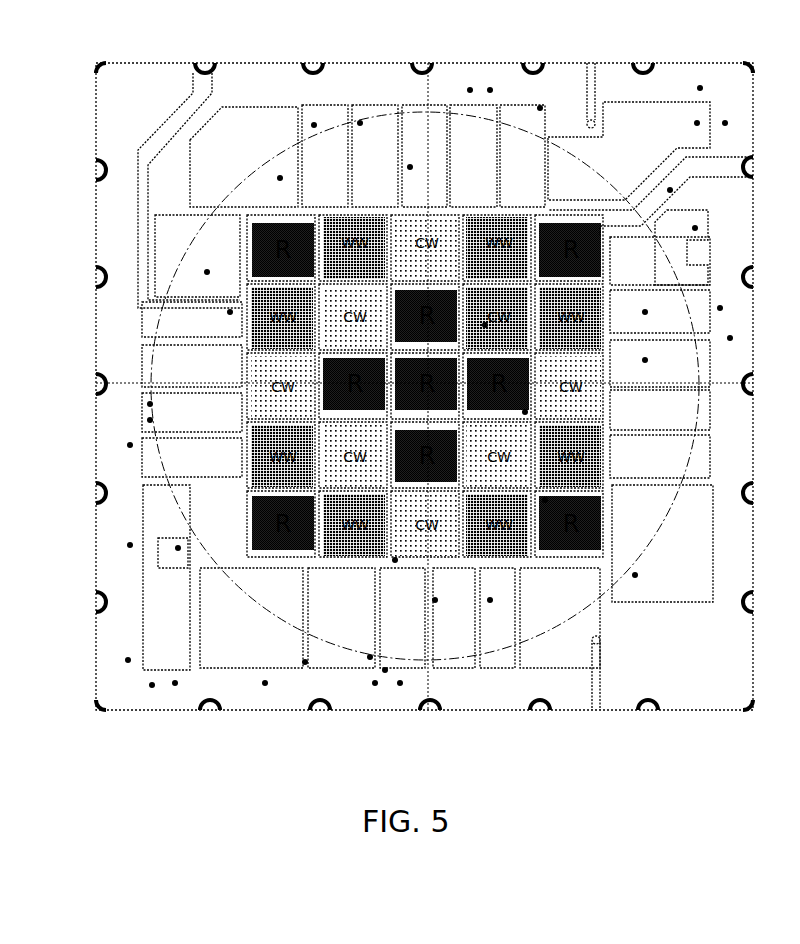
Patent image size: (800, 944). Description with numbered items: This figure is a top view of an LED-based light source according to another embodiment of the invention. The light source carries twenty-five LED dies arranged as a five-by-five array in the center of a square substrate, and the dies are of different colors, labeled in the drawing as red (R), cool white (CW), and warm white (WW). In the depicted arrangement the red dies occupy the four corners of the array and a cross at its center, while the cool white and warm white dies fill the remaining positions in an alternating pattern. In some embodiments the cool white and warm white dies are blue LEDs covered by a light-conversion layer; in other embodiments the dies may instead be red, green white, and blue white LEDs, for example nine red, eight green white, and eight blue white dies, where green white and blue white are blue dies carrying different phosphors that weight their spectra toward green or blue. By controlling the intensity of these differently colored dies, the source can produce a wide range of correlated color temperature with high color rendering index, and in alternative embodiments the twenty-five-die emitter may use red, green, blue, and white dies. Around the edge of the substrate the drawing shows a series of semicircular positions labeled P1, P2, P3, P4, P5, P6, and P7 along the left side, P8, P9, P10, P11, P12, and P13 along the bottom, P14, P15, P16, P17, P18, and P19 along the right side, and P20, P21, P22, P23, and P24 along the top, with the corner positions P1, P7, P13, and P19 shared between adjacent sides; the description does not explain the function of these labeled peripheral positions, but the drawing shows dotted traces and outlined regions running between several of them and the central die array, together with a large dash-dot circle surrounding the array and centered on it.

The pad P1 is at (89, 62).
The pad P2 is at (90, 170).
The pad P3 is at (90, 277).
The pad P4 is at (90, 384).
The pad P5 is at (90, 493).
The pad P6 is at (90, 602).
The pad P7 is at (92, 712).
The pad P8 is at (210, 714).
The pad P9 is at (320, 714).
The pad P10 is at (430, 714).
The pad P11 is at (540, 714).
The pad P12 is at (648, 714).
The pad P13 is at (761, 712).
The pad P14 is at (761, 602).
The pad P15 is at (761, 493).
The pad P16 is at (761, 384).
The pad P17 is at (761, 277).
The pad P18 is at (761, 167).
The pad P19 is at (761, 62).
The pad P20 is at (643, 58).
The pad P21 is at (533, 58).
The pad P22 is at (422, 58).
The pad P23 is at (313, 58).
The pad P24 is at (205, 58).